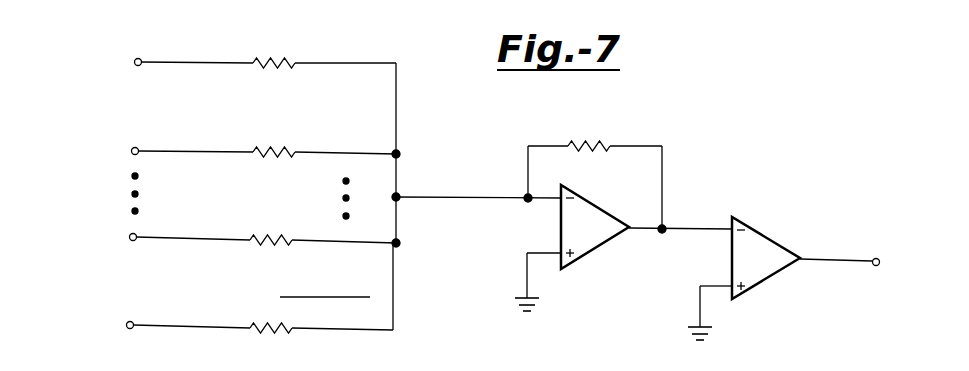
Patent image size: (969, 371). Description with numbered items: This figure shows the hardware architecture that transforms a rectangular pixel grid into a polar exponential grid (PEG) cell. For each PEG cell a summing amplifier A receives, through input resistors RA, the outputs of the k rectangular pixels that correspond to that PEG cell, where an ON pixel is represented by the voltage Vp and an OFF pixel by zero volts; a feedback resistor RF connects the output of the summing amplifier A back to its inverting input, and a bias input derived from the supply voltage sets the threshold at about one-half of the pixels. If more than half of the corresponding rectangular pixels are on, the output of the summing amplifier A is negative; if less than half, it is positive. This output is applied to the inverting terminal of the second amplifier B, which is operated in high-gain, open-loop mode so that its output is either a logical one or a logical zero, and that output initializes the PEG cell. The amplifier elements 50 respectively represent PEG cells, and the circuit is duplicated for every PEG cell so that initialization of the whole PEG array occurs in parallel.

The amplifier elements 50 is at (650, 127).
The summing amplifier A is at (595, 227).
The second amplifier B is at (766, 258).
The feedback resistor RF is at (588, 134).
The input resistor RA is at (274, 50).